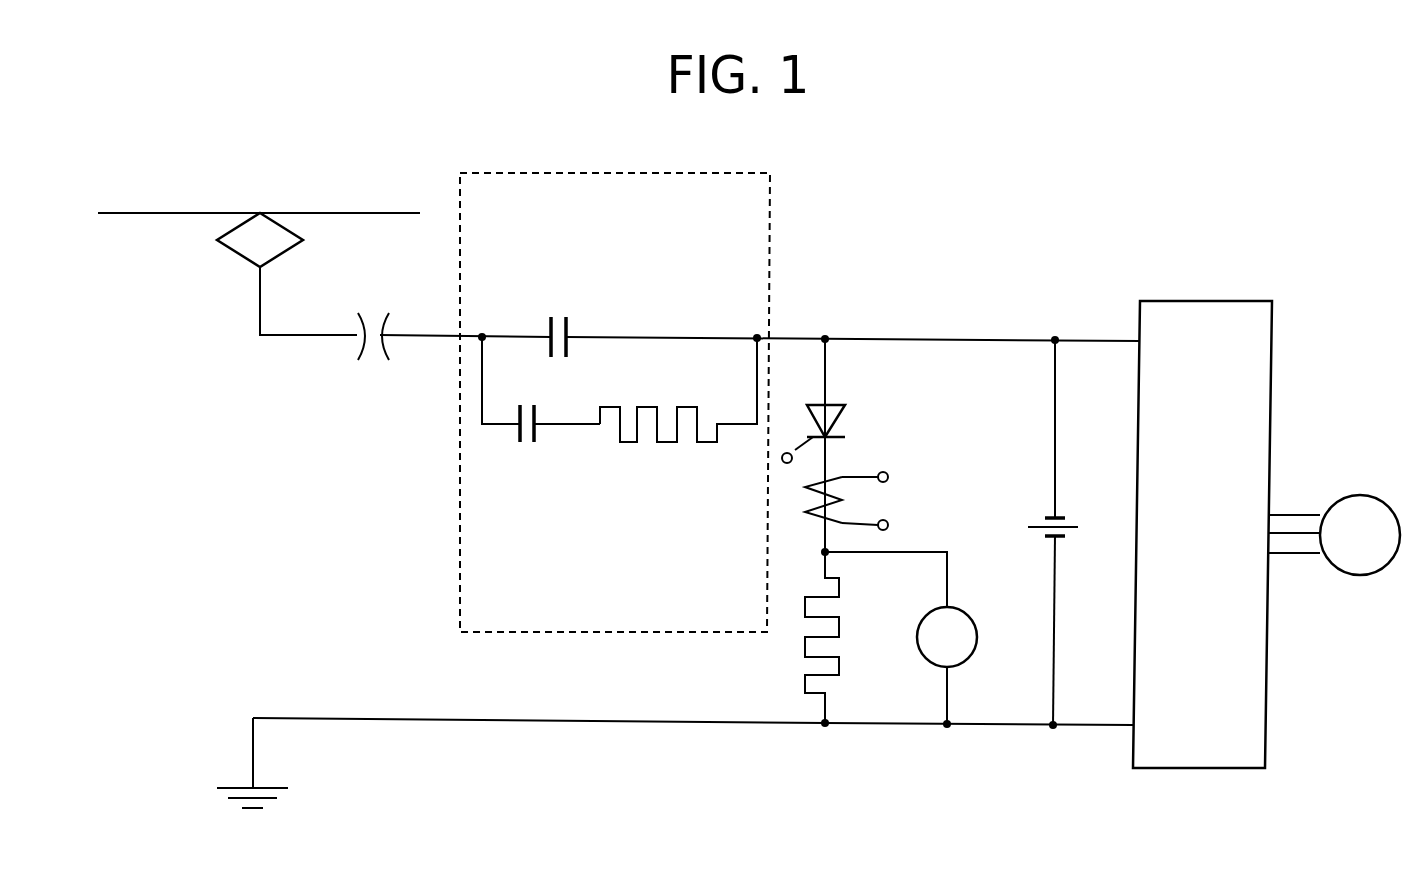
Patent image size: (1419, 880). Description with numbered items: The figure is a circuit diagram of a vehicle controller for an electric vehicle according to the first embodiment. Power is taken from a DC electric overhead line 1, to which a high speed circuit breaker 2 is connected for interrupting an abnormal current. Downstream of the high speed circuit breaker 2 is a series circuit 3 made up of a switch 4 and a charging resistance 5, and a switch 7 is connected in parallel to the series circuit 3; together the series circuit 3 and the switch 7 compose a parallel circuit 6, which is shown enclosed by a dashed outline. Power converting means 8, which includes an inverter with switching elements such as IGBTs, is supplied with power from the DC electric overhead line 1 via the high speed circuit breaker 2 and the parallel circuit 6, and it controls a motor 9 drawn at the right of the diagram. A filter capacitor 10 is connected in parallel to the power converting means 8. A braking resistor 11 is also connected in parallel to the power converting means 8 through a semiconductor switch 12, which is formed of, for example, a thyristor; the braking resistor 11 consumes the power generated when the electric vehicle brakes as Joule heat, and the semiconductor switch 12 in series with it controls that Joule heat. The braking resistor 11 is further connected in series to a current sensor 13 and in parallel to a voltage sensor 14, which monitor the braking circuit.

The DC electric overhead line 1 is at (303, 240).
The high speed circuit breaker 2 is at (378, 305).
The series circuit 3 is at (619, 467).
The switch 4 is at (525, 452).
The charging resistance 5 is at (678, 440).
The parallel circuit 6 is at (608, 173).
The switch 7 is at (560, 310).
The power converting means 8 is at (1203, 301).
The motor 9 is at (1358, 495).
The filter capacitor 10 is at (1062, 500).
The braking resistor 11 is at (805, 688).
The semiconductor switch 12 is at (833, 405).
The current sensor 13 is at (865, 477).
The voltage sensor 14 is at (960, 665).